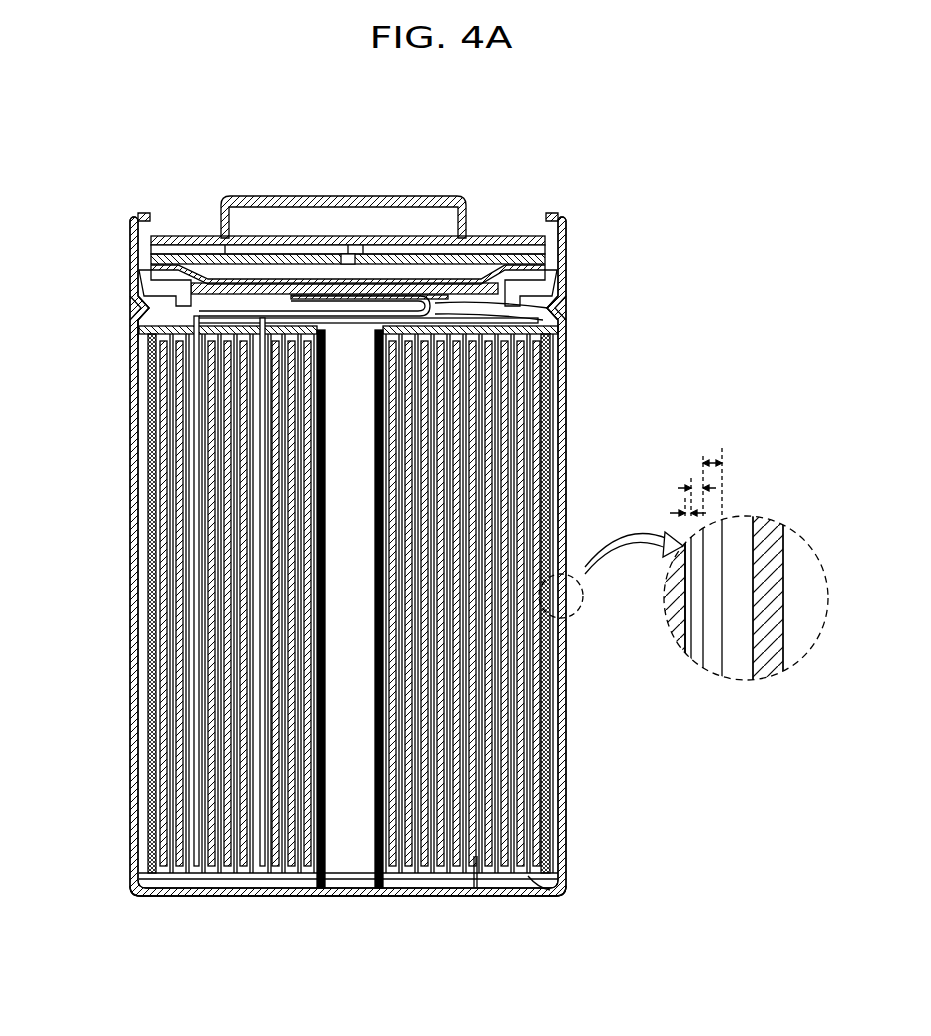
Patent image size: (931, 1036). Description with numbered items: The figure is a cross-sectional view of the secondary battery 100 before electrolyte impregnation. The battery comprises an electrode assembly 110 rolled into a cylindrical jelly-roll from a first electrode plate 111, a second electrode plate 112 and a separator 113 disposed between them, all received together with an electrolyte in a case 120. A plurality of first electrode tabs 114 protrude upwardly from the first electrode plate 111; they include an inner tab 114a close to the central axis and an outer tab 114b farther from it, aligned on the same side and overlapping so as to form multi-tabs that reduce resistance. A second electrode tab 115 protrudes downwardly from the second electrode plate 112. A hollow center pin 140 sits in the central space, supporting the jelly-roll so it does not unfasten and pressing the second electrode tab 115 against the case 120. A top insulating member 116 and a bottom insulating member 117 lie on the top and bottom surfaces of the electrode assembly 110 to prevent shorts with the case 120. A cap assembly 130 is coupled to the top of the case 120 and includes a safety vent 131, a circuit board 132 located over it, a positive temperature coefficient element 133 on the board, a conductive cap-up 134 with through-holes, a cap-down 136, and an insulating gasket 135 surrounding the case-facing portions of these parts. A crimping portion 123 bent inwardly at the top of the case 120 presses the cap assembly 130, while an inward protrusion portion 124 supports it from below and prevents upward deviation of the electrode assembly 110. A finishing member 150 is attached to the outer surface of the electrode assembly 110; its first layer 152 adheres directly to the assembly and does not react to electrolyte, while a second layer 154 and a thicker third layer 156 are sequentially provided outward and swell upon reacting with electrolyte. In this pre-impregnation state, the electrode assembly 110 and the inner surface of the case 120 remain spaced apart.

The secondary battery 100 is at (588, 164).
The electrode assembly 110 is at (412, 592).
The first electrode plate 111 is at (516, 446).
The second electrode plate 112 is at (538, 372).
The separator 113 is at (528, 409).
The first electrode tab 114 is at (399, 311).
The inner tab 114a is at (381, 325).
The outer tab 114b is at (542, 294).
The second electrode tab 115 is at (472, 874).
The top insulating member 116 is at (128, 322).
The bottom insulating member 117 is at (552, 884).
The case 120 is at (760, 665).
The crimping portion 123 is at (124, 211).
The inward protrusion portion 124 is at (126, 300).
The cap assembly 130 is at (348, 209).
The safety vent 131 is at (312, 268).
The circuit board 132 is at (355, 274).
The positive temperature coefficient element 133 is at (410, 250).
The cap-up 134 is at (239, 200).
The insulating gasket 135 is at (228, 140).
The cap-down 136 is at (274, 242).
The center pin 140 is at (366, 884).
The finishing member 150 is at (683, 603).
The first layer 152 is at (681, 667).
The second layer 154 is at (694, 667).
The third layer 156 is at (729, 631).